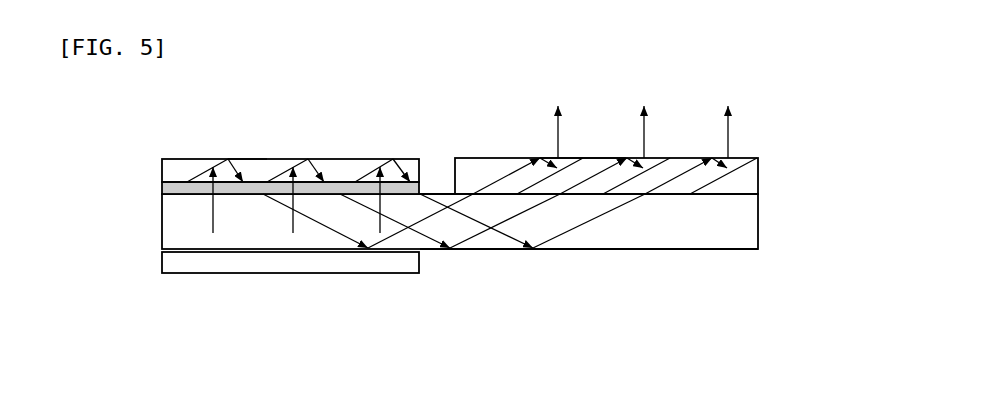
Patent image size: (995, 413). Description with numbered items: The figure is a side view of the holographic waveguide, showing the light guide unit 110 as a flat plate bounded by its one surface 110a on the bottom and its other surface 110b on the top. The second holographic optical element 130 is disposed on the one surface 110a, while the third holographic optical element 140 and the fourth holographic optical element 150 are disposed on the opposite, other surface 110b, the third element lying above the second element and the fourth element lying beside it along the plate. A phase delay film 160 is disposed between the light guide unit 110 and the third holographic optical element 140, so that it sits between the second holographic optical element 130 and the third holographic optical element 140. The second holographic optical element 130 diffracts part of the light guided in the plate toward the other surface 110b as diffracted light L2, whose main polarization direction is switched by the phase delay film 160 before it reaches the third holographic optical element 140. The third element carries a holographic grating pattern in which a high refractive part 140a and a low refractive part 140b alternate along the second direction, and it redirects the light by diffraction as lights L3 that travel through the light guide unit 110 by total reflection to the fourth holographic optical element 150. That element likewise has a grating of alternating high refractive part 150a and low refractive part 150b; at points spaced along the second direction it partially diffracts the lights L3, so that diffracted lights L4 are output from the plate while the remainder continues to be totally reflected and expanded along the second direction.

The light guide unit 110 is at (160, 223).
The one surface of the light guide unit 110a is at (497, 251).
The other surface of the light guide unit 110b is at (438, 192).
The second holographic optical element 130 is at (255, 275).
The third holographic optical element 140 is at (160, 173).
The high refractive part 140a is at (196, 172).
The low refractive part 140b is at (258, 174).
The fourth holographic optical element 150 is at (762, 180).
The high refractive part 150a is at (517, 170).
The low refractive part 150b is at (592, 163).
The phase delay film 160 is at (160, 188).
The diffracted light L2 is at (296, 201).
The diffracted lights L3 is at (454, 221).
The diffracted lights L4 is at (643, 132).